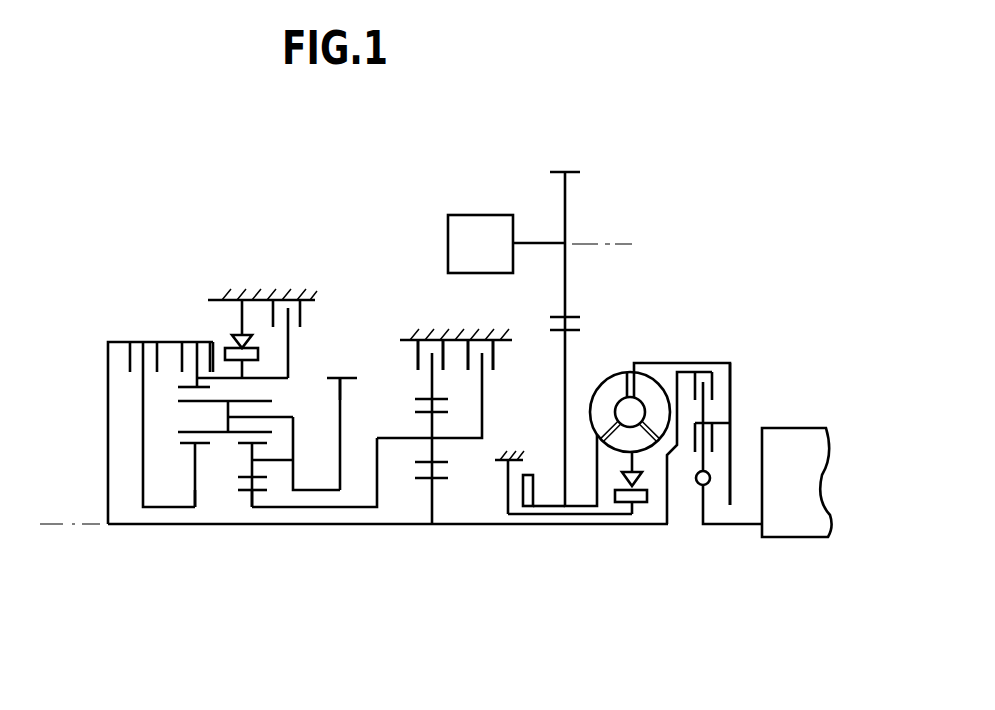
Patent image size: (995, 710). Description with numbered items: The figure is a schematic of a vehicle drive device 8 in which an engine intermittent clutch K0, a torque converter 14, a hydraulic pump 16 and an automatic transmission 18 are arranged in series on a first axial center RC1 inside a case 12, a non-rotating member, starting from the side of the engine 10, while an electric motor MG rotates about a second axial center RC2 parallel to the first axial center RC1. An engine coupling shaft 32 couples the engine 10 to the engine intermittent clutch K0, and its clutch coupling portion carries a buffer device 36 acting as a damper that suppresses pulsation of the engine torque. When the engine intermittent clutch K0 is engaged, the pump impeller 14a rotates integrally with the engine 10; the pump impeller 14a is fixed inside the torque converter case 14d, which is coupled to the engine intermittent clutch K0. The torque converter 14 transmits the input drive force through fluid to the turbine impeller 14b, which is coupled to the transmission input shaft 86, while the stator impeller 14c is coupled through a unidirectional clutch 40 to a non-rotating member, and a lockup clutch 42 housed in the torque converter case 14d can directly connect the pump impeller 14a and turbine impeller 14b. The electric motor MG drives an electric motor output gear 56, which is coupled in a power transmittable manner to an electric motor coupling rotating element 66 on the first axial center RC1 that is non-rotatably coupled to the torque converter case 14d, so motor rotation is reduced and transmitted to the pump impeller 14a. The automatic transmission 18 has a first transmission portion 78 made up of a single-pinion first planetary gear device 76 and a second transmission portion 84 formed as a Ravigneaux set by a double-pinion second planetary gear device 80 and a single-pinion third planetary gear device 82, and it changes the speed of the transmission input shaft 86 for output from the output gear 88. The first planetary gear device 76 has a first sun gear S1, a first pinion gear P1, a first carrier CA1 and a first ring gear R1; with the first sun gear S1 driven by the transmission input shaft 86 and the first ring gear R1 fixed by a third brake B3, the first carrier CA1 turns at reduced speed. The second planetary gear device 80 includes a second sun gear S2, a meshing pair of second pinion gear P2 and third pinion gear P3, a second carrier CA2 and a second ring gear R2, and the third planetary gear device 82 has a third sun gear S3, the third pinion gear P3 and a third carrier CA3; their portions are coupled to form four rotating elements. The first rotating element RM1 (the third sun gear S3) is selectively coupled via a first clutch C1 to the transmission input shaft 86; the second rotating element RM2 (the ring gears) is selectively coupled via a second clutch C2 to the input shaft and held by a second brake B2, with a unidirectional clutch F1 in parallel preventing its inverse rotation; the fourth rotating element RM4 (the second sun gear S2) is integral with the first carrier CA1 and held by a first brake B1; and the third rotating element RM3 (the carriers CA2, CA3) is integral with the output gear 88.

The vehicle drive device 8 is at (795, 143).
The engine 10 is at (782, 433).
The case 12 is at (263, 297).
The torque converter 14 is at (653, 422).
The pump impeller 14a is at (613, 385).
The turbine impeller 14b is at (642, 383).
The stator impeller 14c is at (613, 444).
The torque converter case 14d is at (683, 362).
The hydraulic pump 16 is at (530, 478).
The automatic transmission 18 is at (140, 185).
The engine coupling shaft 32 is at (713, 527).
The buffer device 36 is at (697, 483).
The unidirectional clutch 40 is at (640, 503).
The lockup clutch 42 is at (717, 388).
The electric motor output gear 56 is at (567, 296).
The electric motor coupling rotating element 66 is at (565, 404).
The first planetary gear device 76 is at (431, 542).
The first transmission portion 78 is at (418, 298).
The second planetary gear device 80 is at (256, 542).
The third planetary gear device 82 is at (198, 534).
The second transmission portion 84 is at (210, 248).
The transmission input shaft 86 is at (493, 525).
The output gear 88 is at (358, 376).
The first brake B1 is at (495, 358).
The second brake B2 is at (307, 313).
The third brake B3 is at (417, 360).
The first clutch C1 is at (128, 372).
The second clutch C2 is at (218, 352).
The first carrier CA1 is at (460, 440).
The second carrier CA2 is at (292, 407).
The third carrier CA3 is at (292, 417).
The unidirectional clutch F1 is at (240, 340).
The engine intermittent clutch K0 is at (715, 440).
The electric motor MG is at (506, 244).
The first pinion gear P1 is at (422, 413).
The second pinion gear P2 is at (243, 448).
The third pinion gear P3 is at (186, 405).
The first ring gear R1 is at (440, 404).
The second ring gear R2 is at (147, 338).
The first axial center RC1 is at (62, 530).
The second axial center RC2 is at (625, 243).
The first rotating element RM1 is at (155, 510).
The second rotating element RM2 is at (235, 379).
The third rotating element RM3 is at (296, 427).
The fourth rotating element RM4 is at (320, 510).
The first sun gear S1 is at (422, 480).
The second sun gear S2 is at (243, 492).
The third sun gear S3 is at (185, 448).